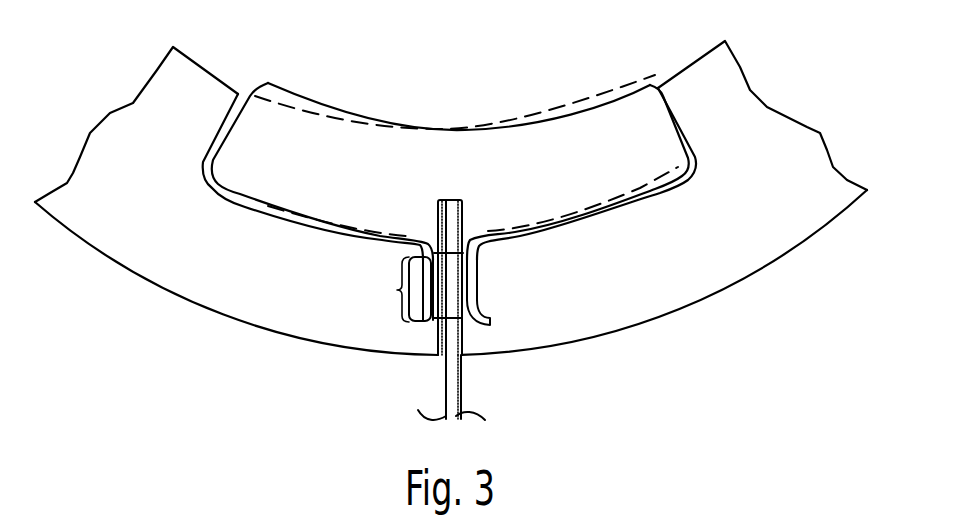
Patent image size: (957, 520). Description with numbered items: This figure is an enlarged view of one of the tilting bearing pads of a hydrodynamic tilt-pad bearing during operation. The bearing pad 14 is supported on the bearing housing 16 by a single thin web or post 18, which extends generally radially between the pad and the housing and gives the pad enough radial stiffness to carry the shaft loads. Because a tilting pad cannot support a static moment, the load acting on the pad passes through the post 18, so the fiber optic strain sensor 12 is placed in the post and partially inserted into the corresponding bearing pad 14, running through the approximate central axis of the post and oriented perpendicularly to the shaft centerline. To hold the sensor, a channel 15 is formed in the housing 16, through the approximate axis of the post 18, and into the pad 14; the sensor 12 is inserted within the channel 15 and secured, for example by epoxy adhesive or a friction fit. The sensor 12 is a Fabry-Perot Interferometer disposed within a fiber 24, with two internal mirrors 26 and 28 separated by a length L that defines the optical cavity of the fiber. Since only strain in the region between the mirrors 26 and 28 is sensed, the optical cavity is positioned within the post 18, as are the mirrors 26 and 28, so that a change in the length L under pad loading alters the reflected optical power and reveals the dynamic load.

The fiber optic strain sensor 12 is at (450, 192).
The bearing pad 14 is at (355, 122).
The channel 15 is at (462, 221).
The bearing housing 16 is at (622, 323).
The post 18 is at (463, 300).
The fiber 24 is at (447, 377).
The internal mirror 26 is at (431, 318).
The internal mirror 28 is at (471, 256).
The length L is at (398, 289).